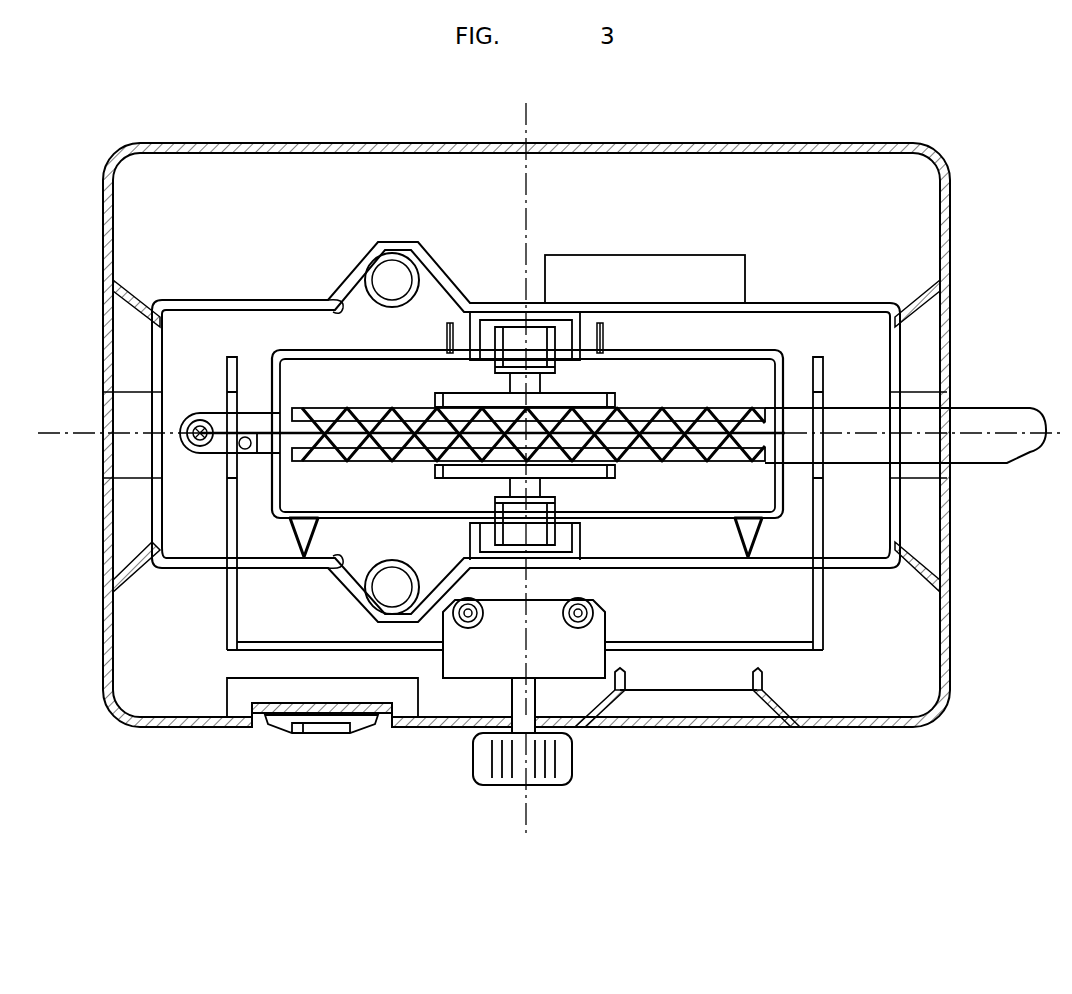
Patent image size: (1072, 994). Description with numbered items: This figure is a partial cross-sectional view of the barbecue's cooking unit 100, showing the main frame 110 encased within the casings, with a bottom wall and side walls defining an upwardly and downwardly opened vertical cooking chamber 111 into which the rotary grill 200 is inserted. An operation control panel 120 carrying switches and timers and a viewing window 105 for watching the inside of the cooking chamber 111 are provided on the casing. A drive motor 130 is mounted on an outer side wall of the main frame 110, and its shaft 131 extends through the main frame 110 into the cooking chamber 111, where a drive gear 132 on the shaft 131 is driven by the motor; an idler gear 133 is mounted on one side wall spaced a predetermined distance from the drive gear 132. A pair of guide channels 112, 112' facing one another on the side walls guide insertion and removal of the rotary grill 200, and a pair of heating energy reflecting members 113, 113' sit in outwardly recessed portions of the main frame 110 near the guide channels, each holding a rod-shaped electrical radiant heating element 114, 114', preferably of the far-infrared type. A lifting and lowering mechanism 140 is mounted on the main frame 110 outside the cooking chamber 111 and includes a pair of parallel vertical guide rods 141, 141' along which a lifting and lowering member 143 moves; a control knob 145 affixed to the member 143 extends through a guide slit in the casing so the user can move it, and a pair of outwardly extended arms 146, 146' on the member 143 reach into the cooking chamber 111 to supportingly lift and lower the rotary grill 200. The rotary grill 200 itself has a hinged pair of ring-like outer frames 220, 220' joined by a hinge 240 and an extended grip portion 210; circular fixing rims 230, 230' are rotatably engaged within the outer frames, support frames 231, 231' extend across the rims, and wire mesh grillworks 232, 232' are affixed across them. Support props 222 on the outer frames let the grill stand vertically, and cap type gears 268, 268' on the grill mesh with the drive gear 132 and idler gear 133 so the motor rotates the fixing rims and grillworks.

The cooking unit 100 is at (772, 141).
The viewing window 105 is at (713, 680).
The main frame 110 is at (867, 304).
The cooking chamber 111 is at (200, 330).
The guide channel 112 is at (561, 541).
The guide channel 112' is at (510, 274).
The heating energy reflecting member 113 is at (291, 589).
The heating energy reflecting member 113' is at (305, 254).
The radiant heating element 114 is at (377, 683).
The radiant heating element 114' is at (382, 240).
The operation control panel 120 is at (238, 731).
The drive motor 130 is at (720, 263).
The motor shaft 131 is at (597, 303).
The drive gear 132 is at (605, 335).
The idler gear 133 is at (446, 332).
The lifting and lowering mechanism 140 is at (460, 683).
The guide rod 141 is at (468, 635).
The guide rod 141' is at (573, 635).
The lifting and lowering member 143 is at (603, 619).
The control knob 145 is at (567, 765).
The arm 146 is at (236, 503).
The arm 146' is at (819, 503).
The rotary grill 200 is at (744, 344).
The grip portion 210 is at (1012, 410).
The outer frame 220 is at (773, 535).
The outer frame 220' is at (571, 415).
The support prop 222 is at (294, 514).
The fixing rim 230 is at (492, 455).
The fixing rim 230' is at (533, 414).
The support frame 231 is at (513, 485).
The upper clamp plate 231' is at (512, 385).
The wire mesh grillwork 232 is at (528, 477).
The wire mesh grillwork 232' is at (528, 392).
The hinge 240 is at (182, 427).
The cap type gear 268 is at (580, 550).
The upper bolt 268' is at (549, 291).